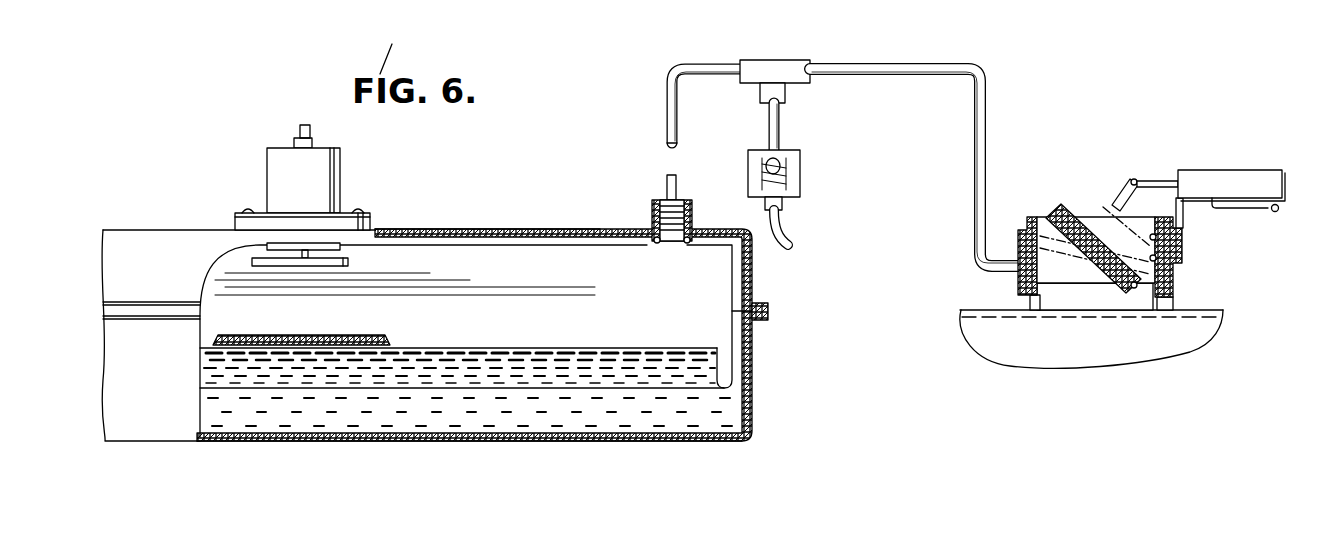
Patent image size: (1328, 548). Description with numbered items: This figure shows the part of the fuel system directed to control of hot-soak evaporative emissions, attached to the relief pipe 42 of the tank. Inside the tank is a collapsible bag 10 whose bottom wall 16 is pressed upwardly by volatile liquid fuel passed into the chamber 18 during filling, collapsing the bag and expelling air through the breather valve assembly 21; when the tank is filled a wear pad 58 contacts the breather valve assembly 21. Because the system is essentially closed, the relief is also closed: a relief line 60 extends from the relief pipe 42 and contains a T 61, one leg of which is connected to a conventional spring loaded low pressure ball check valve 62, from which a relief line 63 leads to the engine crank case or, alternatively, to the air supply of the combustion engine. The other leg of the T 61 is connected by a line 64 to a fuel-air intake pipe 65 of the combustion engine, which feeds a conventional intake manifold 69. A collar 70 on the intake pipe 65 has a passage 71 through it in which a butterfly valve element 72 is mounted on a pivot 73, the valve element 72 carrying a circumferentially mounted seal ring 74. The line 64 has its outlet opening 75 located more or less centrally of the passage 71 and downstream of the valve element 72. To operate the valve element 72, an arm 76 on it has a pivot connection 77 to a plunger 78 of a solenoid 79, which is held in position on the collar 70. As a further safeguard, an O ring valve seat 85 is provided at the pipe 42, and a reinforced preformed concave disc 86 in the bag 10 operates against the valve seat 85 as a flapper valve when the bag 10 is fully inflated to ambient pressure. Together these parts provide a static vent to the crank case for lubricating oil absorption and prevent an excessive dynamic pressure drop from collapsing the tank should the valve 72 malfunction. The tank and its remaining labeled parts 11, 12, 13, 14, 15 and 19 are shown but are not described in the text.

The bag 10 is at (407, 237).
The tank assembly 11 is at (525, 324).
The tank wall 12 is at (555, 228).
The bottom wall 13 is at (337, 441).
The liquid 14 is at (752, 398).
The liner 15 is at (445, 243).
The bottom wall 16 is at (528, 348).
The chamber 18 is at (741, 285).
The vapor space 19 is at (648, 318).
The breather valve assembly 21 is at (362, 180).
The relief pipe 42 is at (689, 213).
The wear pad 58 is at (353, 340).
The relief line 60 is at (667, 107).
The T 61 is at (795, 66).
The spring loaded low pressure ball check valve 62 is at (803, 154).
The relief line 63 is at (788, 236).
The line 64 is at (922, 62).
The fuel-air intake pipe 65 is at (1058, 298).
The intake manifold 69 is at (1000, 340).
The collar 70 is at (1182, 258).
The passage 71 is at (1156, 234).
The butterfly valve element 72 is at (1070, 214).
The pivot 73 is at (1113, 232).
The seal ring 74 is at (1054, 208).
The outlet opening 75 is at (1087, 267).
The arm 76 is at (1118, 197).
The pivot connection 77 is at (1137, 179).
The plunger 78 is at (1165, 181).
The solenoid 79 is at (1240, 172).
The O ring valve seat 85 is at (660, 243).
The reinforced preformed concave disc 86 is at (683, 244).